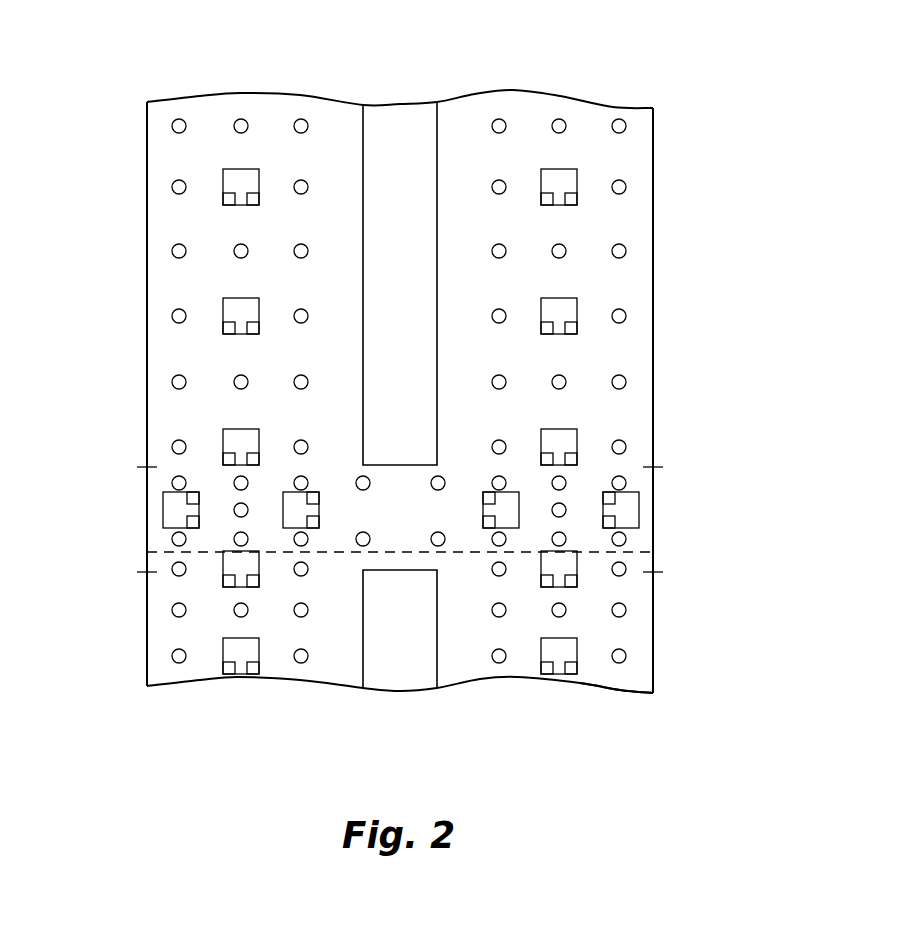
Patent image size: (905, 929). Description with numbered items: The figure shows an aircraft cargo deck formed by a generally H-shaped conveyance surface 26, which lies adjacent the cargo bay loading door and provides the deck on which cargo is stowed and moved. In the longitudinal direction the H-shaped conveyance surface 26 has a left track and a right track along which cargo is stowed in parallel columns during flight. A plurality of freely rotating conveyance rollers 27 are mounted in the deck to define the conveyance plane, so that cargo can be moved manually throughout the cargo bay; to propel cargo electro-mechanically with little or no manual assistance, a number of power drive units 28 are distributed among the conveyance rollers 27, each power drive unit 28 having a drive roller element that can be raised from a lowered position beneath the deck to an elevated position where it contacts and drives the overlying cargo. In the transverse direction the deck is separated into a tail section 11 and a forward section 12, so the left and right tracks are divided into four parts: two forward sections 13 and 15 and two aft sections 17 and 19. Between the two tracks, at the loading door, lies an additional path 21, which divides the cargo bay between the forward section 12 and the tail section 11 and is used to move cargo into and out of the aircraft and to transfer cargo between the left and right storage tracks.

The tail section 11 is at (128, 641).
The forward section 12 is at (118, 247).
The forward section of track 13 is at (313, 115).
The forward section of track 15 is at (637, 122).
The aft section of track 17 is at (331, 670).
The aft section of track 19 is at (631, 687).
The additional path 21 is at (103, 526).
The H-shaped conveyance surface 26 is at (407, 122).
The conveyance rollers 27 is at (309, 311).
The power drive unit 28 is at (261, 440).